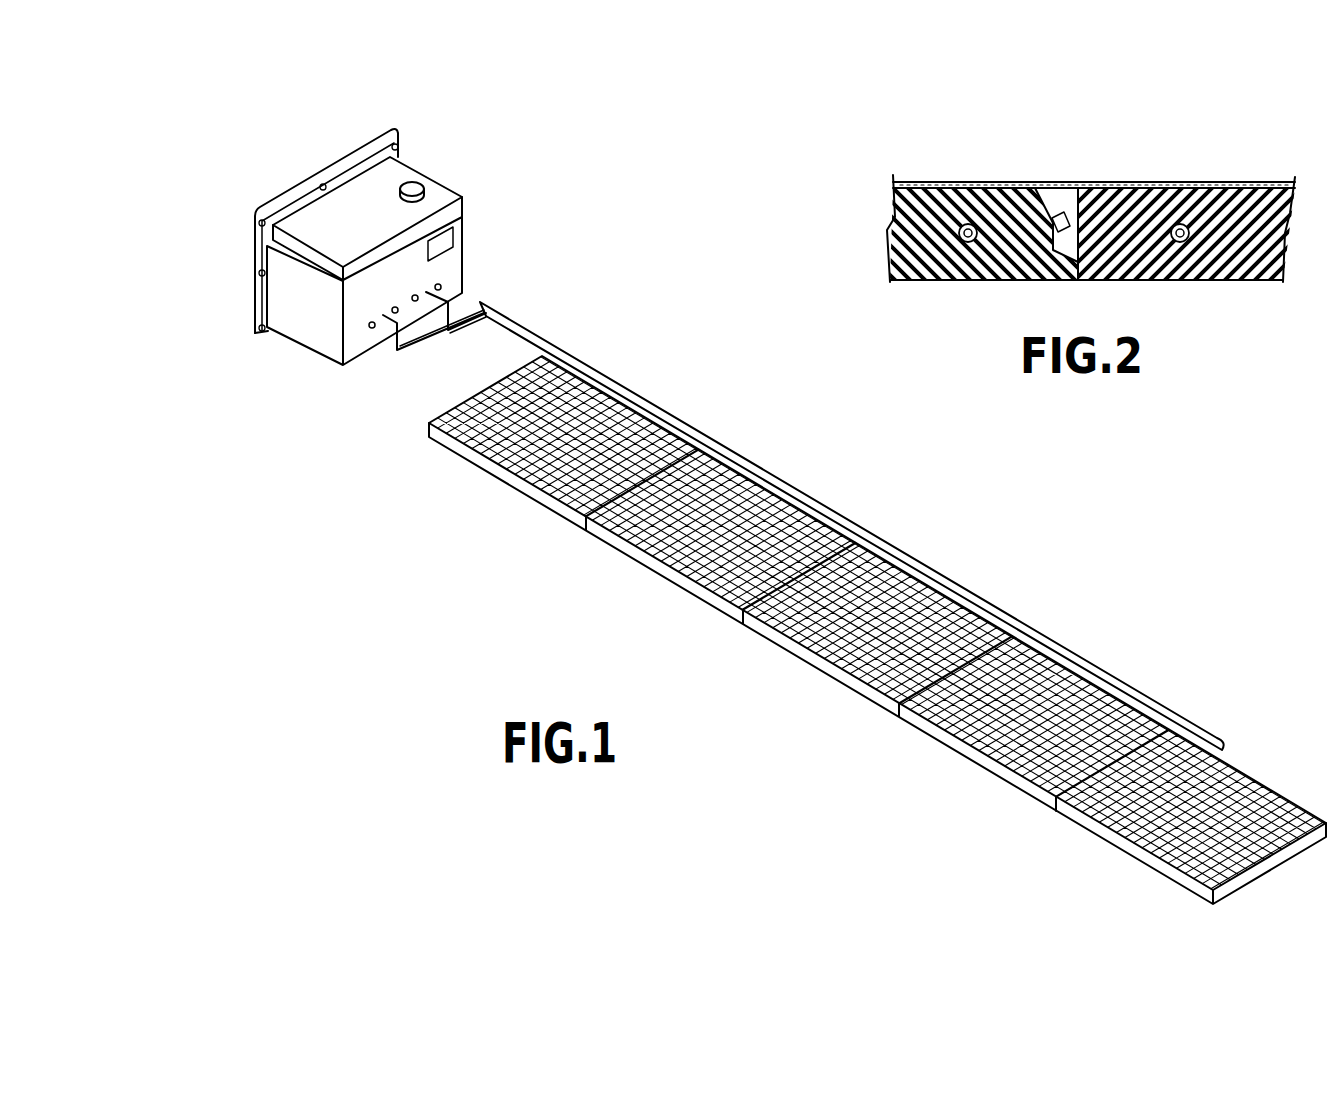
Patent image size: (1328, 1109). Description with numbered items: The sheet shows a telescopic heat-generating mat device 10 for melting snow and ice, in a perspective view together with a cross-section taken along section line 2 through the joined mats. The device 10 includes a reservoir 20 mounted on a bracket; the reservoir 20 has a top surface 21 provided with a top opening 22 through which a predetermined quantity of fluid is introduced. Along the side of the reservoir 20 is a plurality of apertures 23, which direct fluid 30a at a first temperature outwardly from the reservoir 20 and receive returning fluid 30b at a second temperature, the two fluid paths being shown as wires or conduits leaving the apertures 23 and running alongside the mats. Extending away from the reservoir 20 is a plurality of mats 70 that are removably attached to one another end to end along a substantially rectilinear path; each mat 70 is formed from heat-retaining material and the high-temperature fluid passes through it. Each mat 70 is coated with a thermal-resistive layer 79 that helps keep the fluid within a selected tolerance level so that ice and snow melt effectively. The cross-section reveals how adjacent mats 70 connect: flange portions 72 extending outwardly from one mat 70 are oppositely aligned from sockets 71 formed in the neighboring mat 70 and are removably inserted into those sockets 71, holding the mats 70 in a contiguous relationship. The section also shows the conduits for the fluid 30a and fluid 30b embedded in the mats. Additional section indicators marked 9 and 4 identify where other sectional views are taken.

In FIG. 1, the device 10 is at (288, 112).
In FIG. 1, the reservoir 20 is at (283, 310).
In FIG. 1, the top surface 21 is at (410, 163).
In FIG. 1, the top opening 22 is at (423, 188).
In FIG. 1, the apertures 23 is at (440, 284).
In FIG. 1, the fluid with a first temperature 30a is at (405, 350).
In FIG. 2, the fluid with a first temperature 30a is at (938, 280).
In FIG. 1, the fluid with a second temperature 30b is at (450, 337).
In FIG. 2, the fluid with a second temperature 30b is at (1223, 280).
In FIG. 1, the mats 70 is at (620, 437).
In FIG. 2, the mats 70 is at (952, 200).
In FIG. 2, the sockets 71 is at (1064, 187).
In FIG. 2, the flange portions 72 is at (1032, 190).
In FIG. 1, the thermal-resistive layer 79 is at (852, 526).
In FIG. 2, the thermal-resistive layer 79 is at (1142, 187).
In FIG. 1, the section line 9- 9 is at (498, 352).
In FIG. 1, the section line 2- 2 is at (815, 730).
In FIG. 1, the section line 4- 4 is at (853, 783).